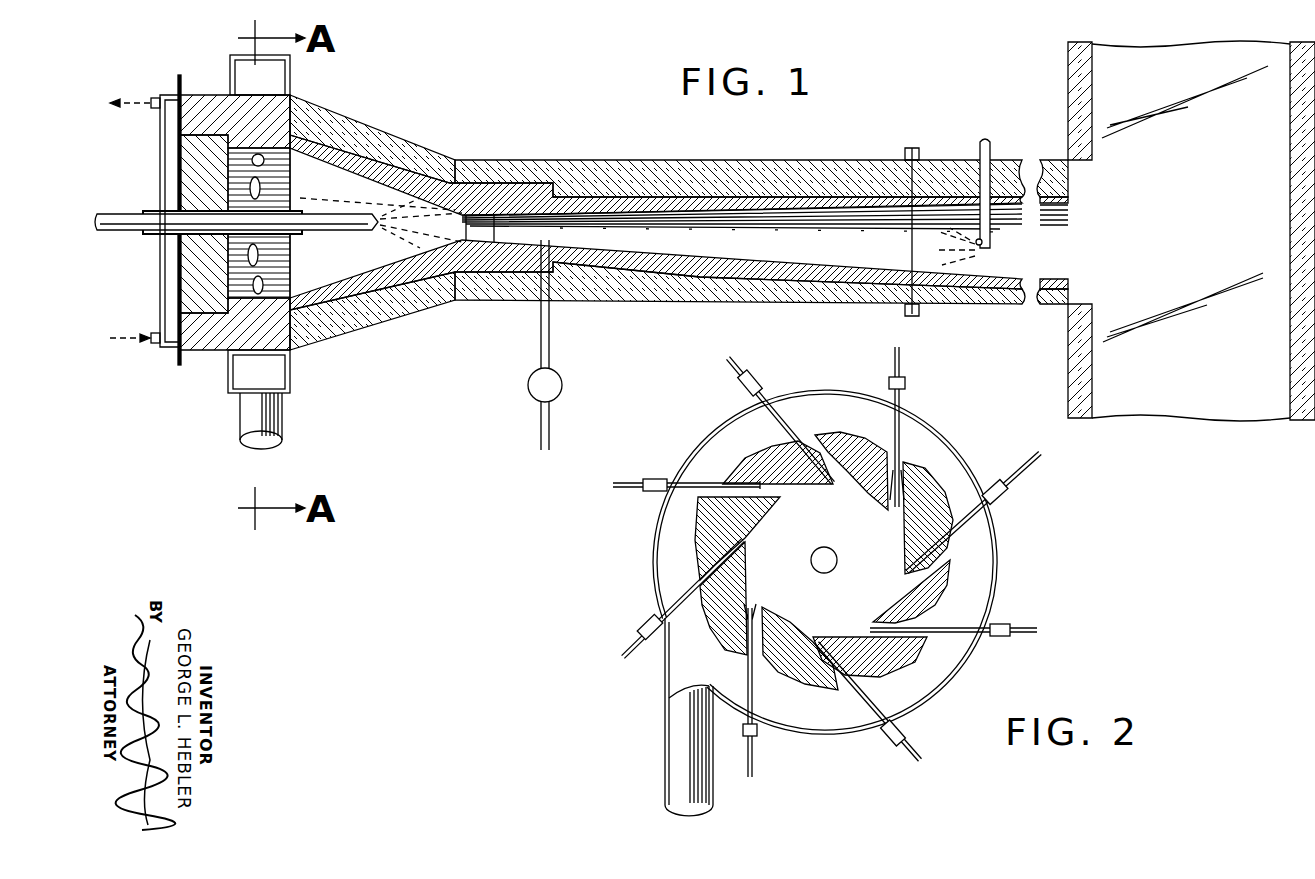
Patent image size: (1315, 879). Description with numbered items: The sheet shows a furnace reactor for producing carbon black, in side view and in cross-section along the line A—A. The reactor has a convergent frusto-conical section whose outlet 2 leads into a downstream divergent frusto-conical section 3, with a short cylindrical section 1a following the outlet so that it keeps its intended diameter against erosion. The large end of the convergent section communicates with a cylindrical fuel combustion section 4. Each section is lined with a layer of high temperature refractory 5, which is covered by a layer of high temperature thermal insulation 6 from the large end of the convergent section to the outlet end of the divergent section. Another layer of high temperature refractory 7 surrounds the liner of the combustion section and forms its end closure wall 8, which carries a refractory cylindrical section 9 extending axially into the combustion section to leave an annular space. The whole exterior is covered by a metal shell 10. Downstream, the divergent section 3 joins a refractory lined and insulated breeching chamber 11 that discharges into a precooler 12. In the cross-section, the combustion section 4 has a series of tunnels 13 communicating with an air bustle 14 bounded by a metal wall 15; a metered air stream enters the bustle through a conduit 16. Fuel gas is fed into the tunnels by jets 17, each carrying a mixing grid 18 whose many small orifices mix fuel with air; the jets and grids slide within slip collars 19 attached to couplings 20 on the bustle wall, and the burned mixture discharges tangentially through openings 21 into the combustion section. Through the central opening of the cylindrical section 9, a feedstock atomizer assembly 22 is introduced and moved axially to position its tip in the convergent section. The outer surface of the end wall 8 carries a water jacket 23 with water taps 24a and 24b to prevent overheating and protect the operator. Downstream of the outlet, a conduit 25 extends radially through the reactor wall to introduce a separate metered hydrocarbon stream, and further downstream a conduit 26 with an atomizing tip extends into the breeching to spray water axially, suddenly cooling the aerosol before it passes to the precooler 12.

In FIG. 1, the short cylindrical section 1a is at (483, 215).
In FIG. 1, the outlet 2 is at (465, 232).
In FIG. 1, the divergent frusto-conical section 3 is at (792, 254).
In FIG. 1, the cylindrical fuel combustion section 4 is at (290, 130).
In FIG. 1, the high temperature refractory layer 5 is at (378, 172).
In FIG. 1, the high temperature thermal insulation layer 6 is at (676, 160).
In FIG. 1, the high temperature refractory layer 7 is at (218, 96).
In FIG. 1, the end closure wall 8 is at (197, 270).
In FIG. 1, the refractory cylindrical section 9 is at (270, 162).
In FIG. 1, the metal shell 10 is at (335, 114).
In FIG. 1, the breeching chamber 11 is at (982, 260).
In FIG. 1, the precooler 12 is at (1206, 259).
In FIG. 2, the tunnels 13 is at (722, 483).
In FIG. 2, the air bustle 14 is at (826, 707).
In FIG. 2, the metal wall 15 is at (706, 437).
In FIG. 2, the conduit 16 is at (667, 757).
In FIG. 2, the jets 17 is at (677, 603).
In FIG. 2, the mixing grid 18 is at (778, 487).
In FIG. 2, the slip collars 19 is at (902, 376).
In FIG. 2, the couplings 20 is at (906, 388).
In FIG. 1, the openings 21 is at (261, 284).
In FIG. 1, the feedstock atomizer assembly 22 is at (132, 215).
In FIG. 1, the water jacket 23 is at (168, 150).
In FIG. 1, the water tap 24a is at (153, 347).
In FIG. 1, the water tap 24b is at (158, 96).
In FIG. 1, the conduit 25 is at (541, 334).
In FIG. 1, the conduit with atomizing tip 26 is at (980, 142).